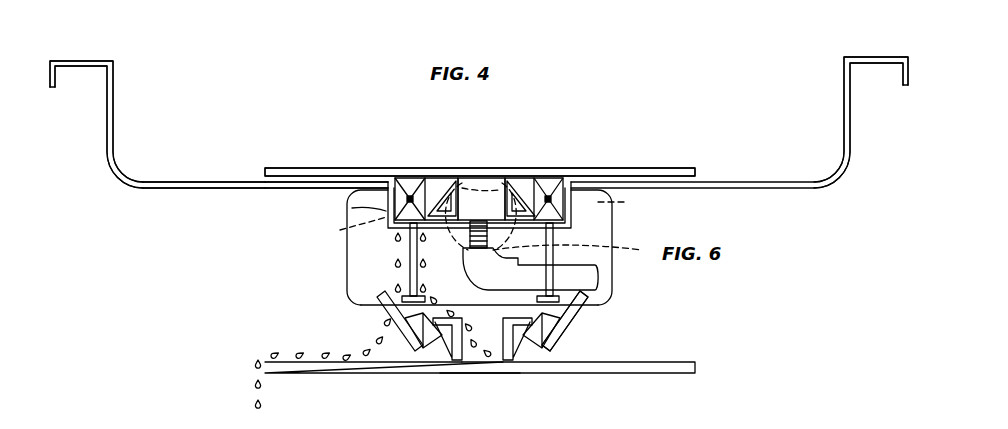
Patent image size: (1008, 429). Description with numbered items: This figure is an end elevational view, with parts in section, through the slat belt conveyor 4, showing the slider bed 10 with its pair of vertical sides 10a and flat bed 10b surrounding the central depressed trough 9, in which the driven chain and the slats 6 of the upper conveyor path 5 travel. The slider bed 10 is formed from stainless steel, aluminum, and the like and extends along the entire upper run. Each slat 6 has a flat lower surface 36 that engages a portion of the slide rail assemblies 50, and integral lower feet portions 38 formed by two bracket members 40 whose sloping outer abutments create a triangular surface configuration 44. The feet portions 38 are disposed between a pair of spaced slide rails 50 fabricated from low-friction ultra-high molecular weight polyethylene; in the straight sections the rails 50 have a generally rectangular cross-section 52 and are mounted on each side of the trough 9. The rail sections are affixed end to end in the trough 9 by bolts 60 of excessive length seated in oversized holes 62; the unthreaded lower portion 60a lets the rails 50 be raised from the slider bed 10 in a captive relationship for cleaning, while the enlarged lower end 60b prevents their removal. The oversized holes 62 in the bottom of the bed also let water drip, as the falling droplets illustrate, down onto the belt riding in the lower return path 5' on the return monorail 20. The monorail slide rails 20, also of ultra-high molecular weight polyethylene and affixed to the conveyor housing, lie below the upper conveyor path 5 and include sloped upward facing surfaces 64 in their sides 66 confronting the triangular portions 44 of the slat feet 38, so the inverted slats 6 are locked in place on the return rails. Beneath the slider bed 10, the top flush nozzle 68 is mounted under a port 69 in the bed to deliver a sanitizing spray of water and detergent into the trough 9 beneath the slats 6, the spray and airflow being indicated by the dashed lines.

The slat belt conveyor 4 is at (565, 167).
The conveyor path 5 is at (480, 153).
The lower return path 5' is at (480, 384).
The slat 6 is at (484, 183).
The trough 9 is at (388, 209).
The slider bed 10 is at (167, 181).
The vertical sides 10a is at (114, 122).
The flat bed 10b is at (238, 181).
The return monorail slide rails 20 is at (401, 325).
The lower surface 36 is at (305, 189).
The lower feet portions 38 is at (497, 362).
The bracket members 40 is at (453, 182).
The triangular surface configuration 44 is at (437, 360).
The slide rail assemblies 50 is at (485, 221).
The rectangular cross-section 52 is at (407, 183).
The bolts 60 is at (405, 255).
The unthreaded lower portion 60a is at (408, 240).
The enlarged lower end 60b is at (395, 308).
The oversized holes 62 is at (349, 246).
The sloped upward facing surfaces 64 is at (407, 350).
The sides 66 is at (557, 347).
The top flush nozzle 68 is at (493, 182).
The port 69 is at (475, 183).